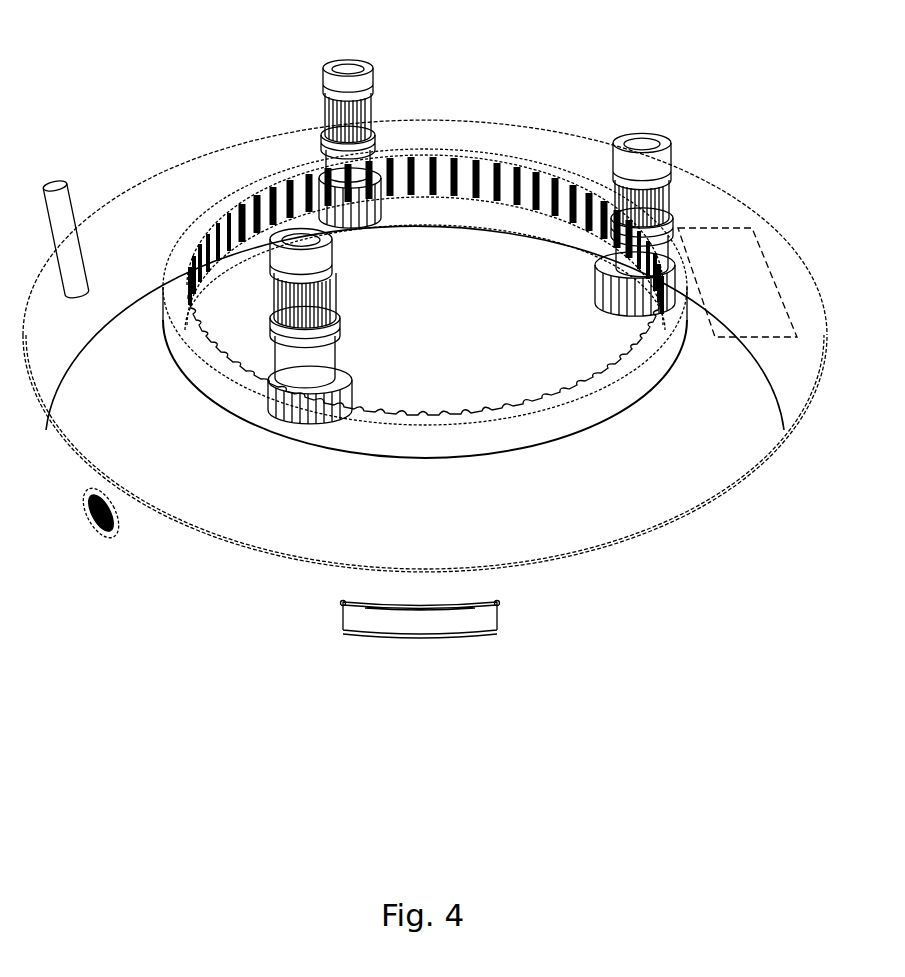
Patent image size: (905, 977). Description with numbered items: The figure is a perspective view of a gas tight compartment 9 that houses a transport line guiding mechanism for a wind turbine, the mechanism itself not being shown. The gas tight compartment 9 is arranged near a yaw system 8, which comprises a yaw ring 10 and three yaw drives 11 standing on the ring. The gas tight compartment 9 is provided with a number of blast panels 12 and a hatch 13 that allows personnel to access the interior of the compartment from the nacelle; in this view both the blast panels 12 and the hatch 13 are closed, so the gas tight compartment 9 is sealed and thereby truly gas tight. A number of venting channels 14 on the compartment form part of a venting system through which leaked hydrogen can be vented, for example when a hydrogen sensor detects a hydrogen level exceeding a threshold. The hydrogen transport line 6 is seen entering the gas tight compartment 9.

The hydrogen transport line 6 is at (65, 220).
The yaw system 8 is at (558, 422).
The gas tight compartment 9 is at (245, 588).
The yaw ring 10 is at (489, 176).
The yaw drives 11 is at (345, 87).
The blast panels 12 is at (428, 622).
The hatch 13 is at (739, 268).
The venting channels 14 is at (90, 517).